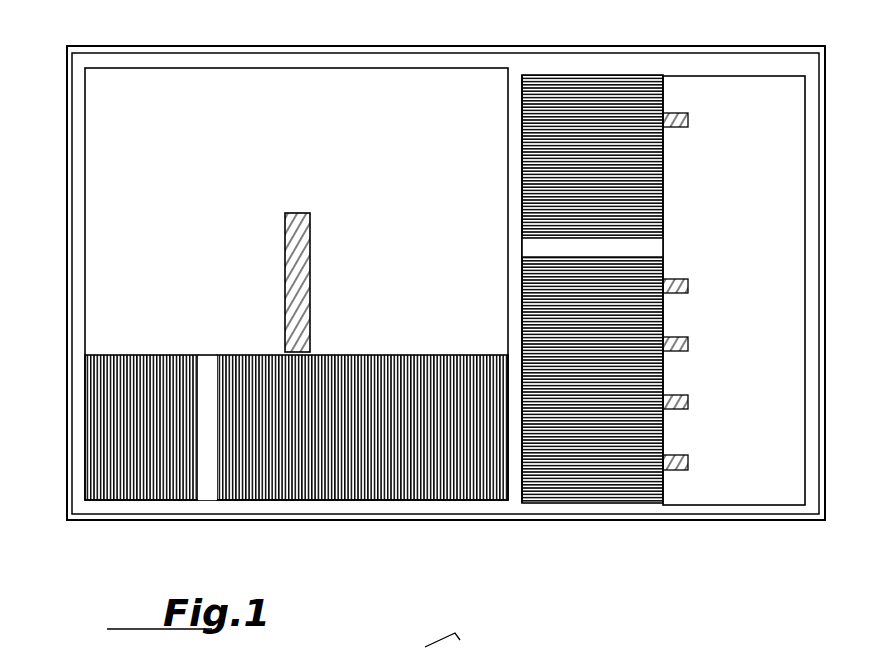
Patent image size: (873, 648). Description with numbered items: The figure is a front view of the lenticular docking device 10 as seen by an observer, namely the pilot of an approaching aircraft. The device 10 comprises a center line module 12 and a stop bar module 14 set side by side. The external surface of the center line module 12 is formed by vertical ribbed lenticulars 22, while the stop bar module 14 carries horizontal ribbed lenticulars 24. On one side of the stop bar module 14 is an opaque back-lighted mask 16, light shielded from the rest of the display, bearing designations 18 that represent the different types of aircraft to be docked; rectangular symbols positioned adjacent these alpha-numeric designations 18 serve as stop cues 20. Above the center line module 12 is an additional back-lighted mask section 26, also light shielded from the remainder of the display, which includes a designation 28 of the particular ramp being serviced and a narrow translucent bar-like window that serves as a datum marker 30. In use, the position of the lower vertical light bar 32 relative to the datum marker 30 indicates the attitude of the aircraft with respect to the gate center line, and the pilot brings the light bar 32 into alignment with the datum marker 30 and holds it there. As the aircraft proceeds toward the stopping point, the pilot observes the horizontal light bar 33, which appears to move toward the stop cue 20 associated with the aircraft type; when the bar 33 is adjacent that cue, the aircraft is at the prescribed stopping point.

The lenticular docking device 10 is at (520, 29).
The center line module 12 is at (98, 464).
The stop bar module 14 is at (622, 487).
The opaque back-lighted mask 16 is at (753, 490).
The designations 18 is at (785, 127).
The stop cues 20 is at (672, 115).
The vertical ribbed lenticulars 22 is at (409, 487).
The horizontal ribbed lenticulars 24 is at (563, 490).
The back-lighted mask section 26 is at (106, 212).
The ramp designation 28 is at (318, 104).
The datum marker 30 is at (290, 283).
The light bar 32 is at (213, 492).
The horizontal light bar 33 is at (523, 241).